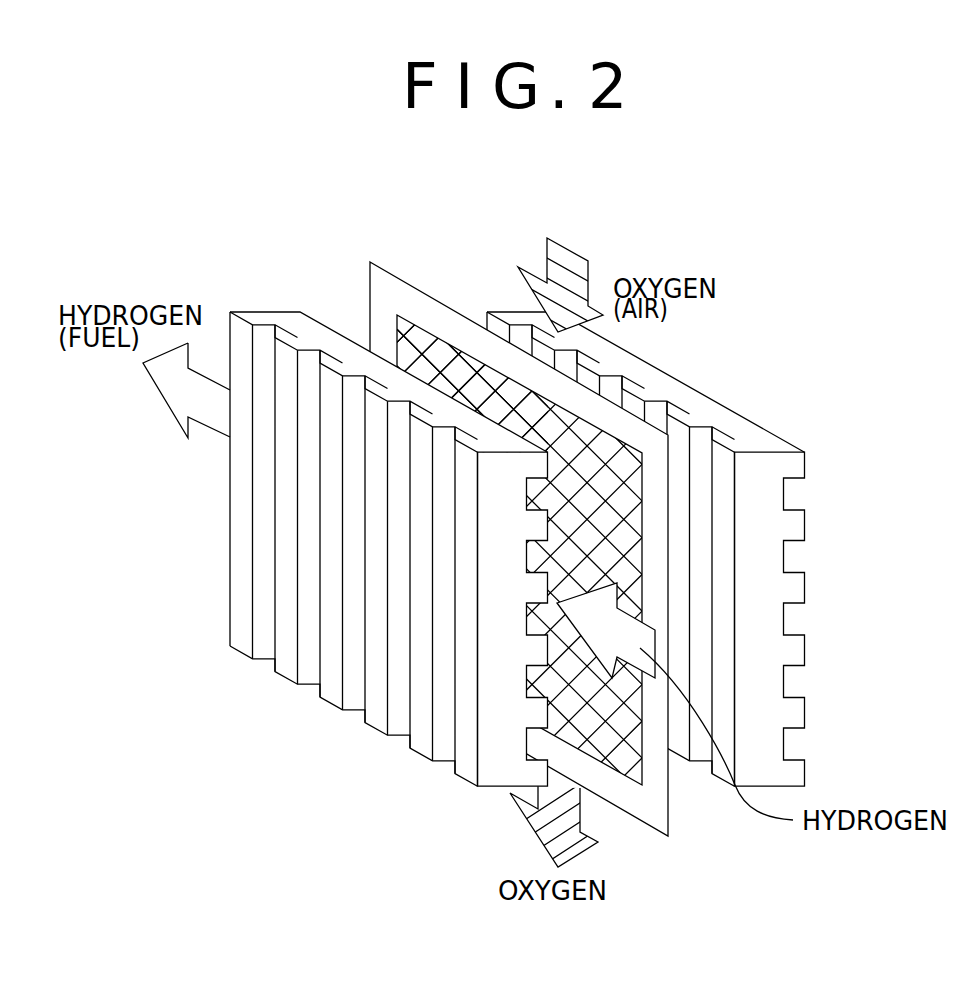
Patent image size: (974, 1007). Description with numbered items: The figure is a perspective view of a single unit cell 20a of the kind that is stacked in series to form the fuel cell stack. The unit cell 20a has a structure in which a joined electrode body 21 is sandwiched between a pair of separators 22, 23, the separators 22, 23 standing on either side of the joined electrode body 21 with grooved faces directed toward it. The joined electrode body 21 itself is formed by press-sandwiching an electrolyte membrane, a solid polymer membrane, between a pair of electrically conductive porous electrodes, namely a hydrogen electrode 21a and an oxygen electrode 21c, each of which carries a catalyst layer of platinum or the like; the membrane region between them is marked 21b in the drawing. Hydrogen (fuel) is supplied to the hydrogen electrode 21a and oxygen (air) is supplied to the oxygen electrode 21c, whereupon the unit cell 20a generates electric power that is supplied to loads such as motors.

The unit cell 20a is at (534, 540).
The joined electrode body 21 is at (577, 530).
The hydrogen electrode 21a is at (393, 318).
The electrolyte membrane 21b is at (655, 527).
The oxygen electrode 21c is at (425, 345).
The separator 22 is at (335, 683).
The separator 23 is at (743, 427).